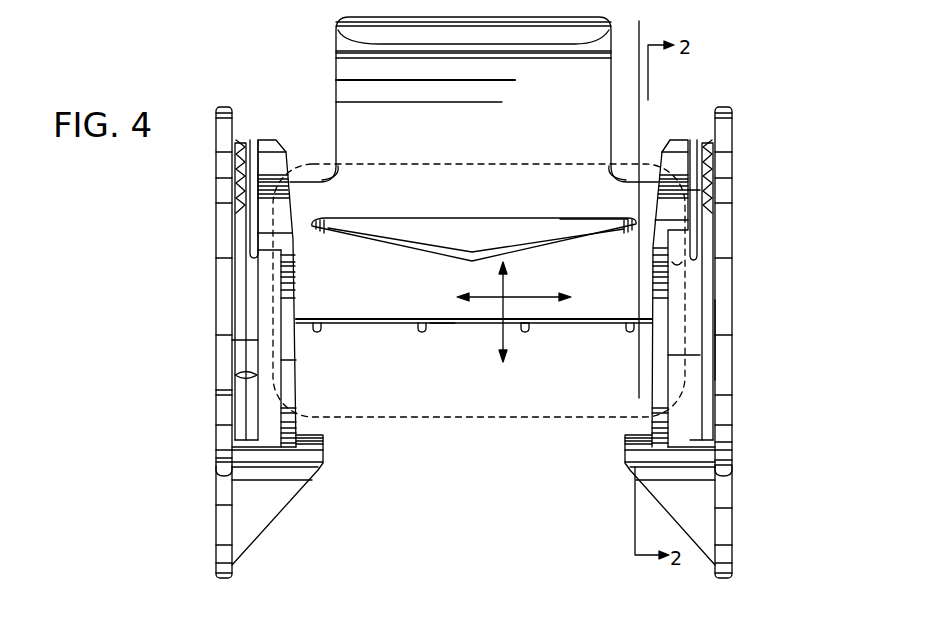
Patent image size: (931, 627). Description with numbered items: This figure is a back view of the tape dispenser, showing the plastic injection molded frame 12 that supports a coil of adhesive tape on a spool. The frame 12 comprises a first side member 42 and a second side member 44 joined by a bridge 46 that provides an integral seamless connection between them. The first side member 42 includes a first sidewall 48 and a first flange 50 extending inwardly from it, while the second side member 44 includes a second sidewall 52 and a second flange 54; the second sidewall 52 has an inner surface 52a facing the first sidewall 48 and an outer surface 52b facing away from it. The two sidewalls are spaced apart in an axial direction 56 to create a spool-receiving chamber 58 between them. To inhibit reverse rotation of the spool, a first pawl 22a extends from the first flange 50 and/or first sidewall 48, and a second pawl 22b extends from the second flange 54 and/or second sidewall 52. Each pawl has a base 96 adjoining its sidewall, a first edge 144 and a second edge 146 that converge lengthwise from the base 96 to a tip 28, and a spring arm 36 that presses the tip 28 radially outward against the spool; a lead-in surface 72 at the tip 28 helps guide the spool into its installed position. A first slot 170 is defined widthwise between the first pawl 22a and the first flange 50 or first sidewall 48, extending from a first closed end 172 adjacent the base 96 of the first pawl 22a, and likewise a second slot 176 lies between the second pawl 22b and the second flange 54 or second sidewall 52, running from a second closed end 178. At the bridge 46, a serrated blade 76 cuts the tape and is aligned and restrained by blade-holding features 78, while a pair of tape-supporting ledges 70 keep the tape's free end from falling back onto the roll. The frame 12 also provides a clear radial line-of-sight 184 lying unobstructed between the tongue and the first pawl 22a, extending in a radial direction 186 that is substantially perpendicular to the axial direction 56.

The frame 12 is at (733, 342).
The first pawl 22a is at (657, 176).
The second pawl 22b is at (288, 163).
The tip 28 is at (267, 137).
The spring arm 36 is at (291, 200).
The first side member 42 is at (707, 84).
The second side member 44 is at (221, 80).
The bridge 46 is at (433, 303).
The first sidewall 48 is at (717, 360).
The first flange 50 is at (653, 343).
The second sidewall 52 is at (233, 343).
The inner surface 52a is at (257, 375).
The outer surface 52b is at (213, 393).
The second flange 54 is at (296, 365).
The axial direction 56 is at (528, 297).
The spool-receiving chamber 58 is at (456, 163).
The tape-supporting ledges 70 is at (315, 418).
The lead-in surface 72 is at (662, 152).
The serrated blade 76 is at (396, 318).
The blade-holding features 78 is at (523, 333).
The base 96 is at (677, 264).
The first edge 144 is at (690, 190).
The second edge 146 is at (652, 190).
The first slot 170 is at (693, 220).
The first closed end 172 is at (697, 262).
The second slot 176 is at (252, 218).
The second closed end 178 is at (254, 262).
The radial line-of-sight 184 is at (638, 81).
The radial direction 186 is at (497, 287).